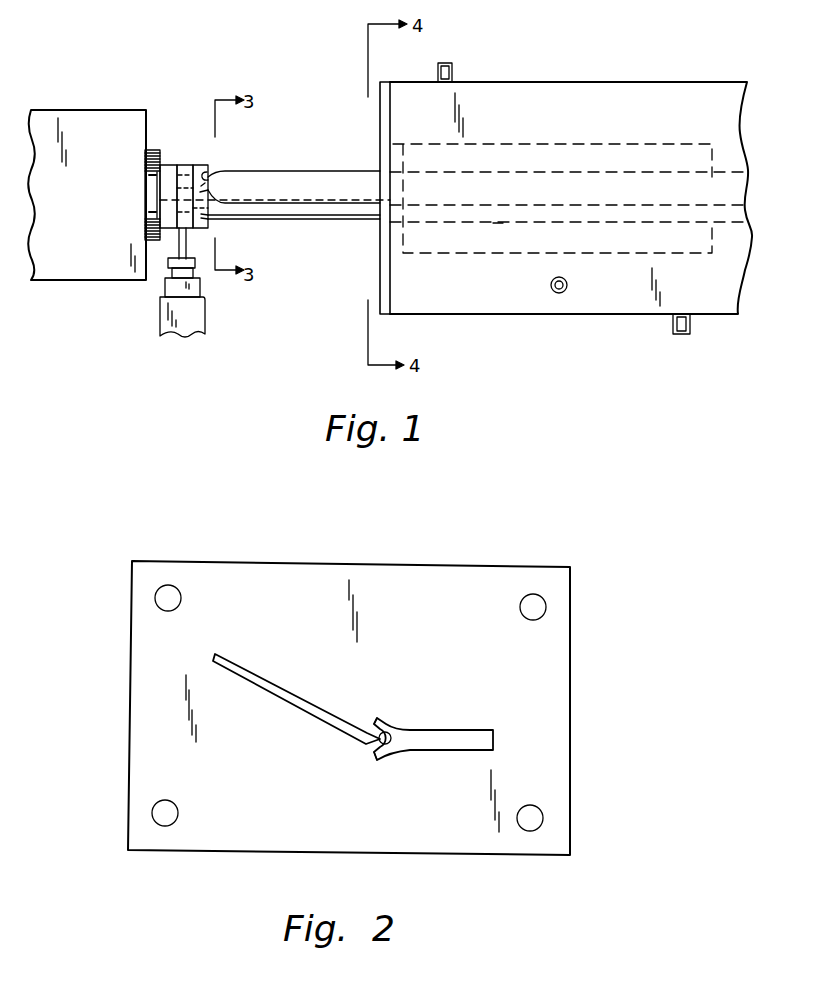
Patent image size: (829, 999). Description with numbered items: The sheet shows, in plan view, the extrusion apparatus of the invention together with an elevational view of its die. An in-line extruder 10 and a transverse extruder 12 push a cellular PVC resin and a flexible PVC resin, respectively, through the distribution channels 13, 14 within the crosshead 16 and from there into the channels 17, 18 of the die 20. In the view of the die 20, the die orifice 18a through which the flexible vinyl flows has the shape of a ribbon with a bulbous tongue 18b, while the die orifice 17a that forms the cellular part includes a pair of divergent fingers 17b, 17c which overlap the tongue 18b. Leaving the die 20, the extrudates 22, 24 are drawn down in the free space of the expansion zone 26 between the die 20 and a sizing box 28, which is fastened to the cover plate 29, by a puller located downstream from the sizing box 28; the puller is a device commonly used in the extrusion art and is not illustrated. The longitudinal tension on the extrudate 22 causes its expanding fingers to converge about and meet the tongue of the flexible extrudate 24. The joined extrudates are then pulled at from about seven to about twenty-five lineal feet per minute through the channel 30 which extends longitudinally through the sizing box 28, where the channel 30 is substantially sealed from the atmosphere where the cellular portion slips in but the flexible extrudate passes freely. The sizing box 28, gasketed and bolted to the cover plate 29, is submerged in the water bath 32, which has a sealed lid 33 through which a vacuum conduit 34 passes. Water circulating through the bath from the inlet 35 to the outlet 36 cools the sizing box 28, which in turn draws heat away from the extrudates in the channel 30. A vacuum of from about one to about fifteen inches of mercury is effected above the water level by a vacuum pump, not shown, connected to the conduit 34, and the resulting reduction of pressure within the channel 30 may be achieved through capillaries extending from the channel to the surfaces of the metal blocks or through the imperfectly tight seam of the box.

In FIG. 1, the in-line extruder 10 is at (83, 110).
In FIG. 1, the transverse extruder 12 is at (160, 315).
In FIG. 1, the distribution channel 13 is at (173, 163).
In FIG. 1, the distribution channel 14 is at (183, 206).
In FIG. 1, the crosshead 16 is at (187, 165).
In FIG. 1, the die channel 17 is at (212, 167).
In FIG. 2, the die orifice 17a is at (462, 728).
In FIG. 2, the divergent finger 17b is at (393, 722).
In FIG. 2, the divergent finger 17c is at (385, 757).
In FIG. 1, the die channel 18 is at (222, 220).
In FIG. 2, the die orifice 18a is at (267, 678).
In FIG. 2, the bulbous tongue 18b is at (372, 743).
In FIG. 1, the die 20 is at (196, 165).
In FIG. 2, the die 20 is at (145, 650).
In FIG. 1, the extrudate 22 is at (270, 170).
In FIG. 1, the extrudate 24 is at (279, 220).
In FIG. 1, the expansion zone 26 is at (309, 228).
In FIG. 1, the sizing box 28 is at (405, 254).
In FIG. 1, the cover plate 29 is at (380, 143).
In FIG. 1, the channel 30 is at (498, 223).
In FIG. 1, the water bath 32 is at (571, 179).
In FIG. 1, the sealed lid 33 is at (570, 133).
In FIG. 1, the vacuum conduit 34 is at (567, 288).
In FIG. 1, the inlet 35 is at (690, 327).
In FIG. 1, the outlet 36 is at (453, 75).